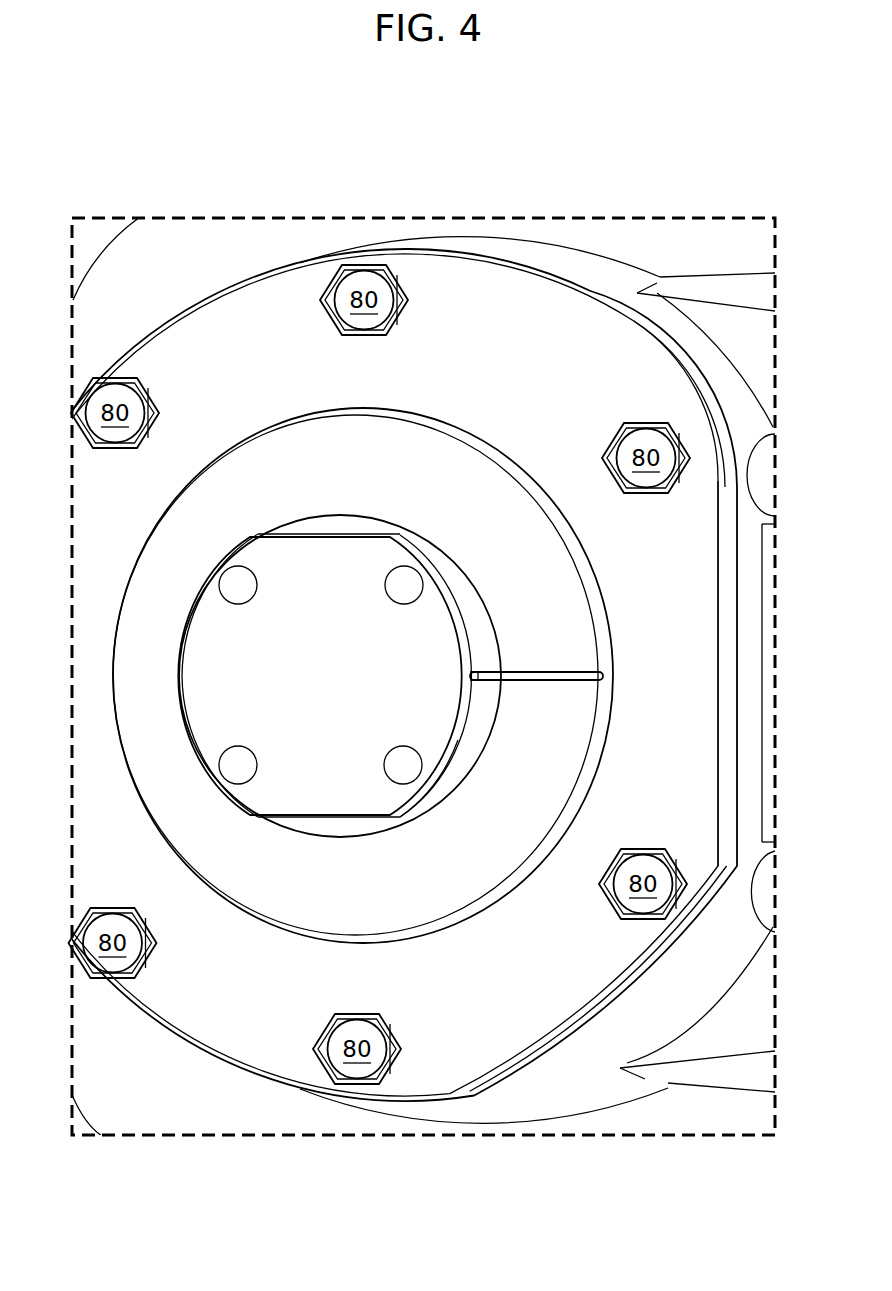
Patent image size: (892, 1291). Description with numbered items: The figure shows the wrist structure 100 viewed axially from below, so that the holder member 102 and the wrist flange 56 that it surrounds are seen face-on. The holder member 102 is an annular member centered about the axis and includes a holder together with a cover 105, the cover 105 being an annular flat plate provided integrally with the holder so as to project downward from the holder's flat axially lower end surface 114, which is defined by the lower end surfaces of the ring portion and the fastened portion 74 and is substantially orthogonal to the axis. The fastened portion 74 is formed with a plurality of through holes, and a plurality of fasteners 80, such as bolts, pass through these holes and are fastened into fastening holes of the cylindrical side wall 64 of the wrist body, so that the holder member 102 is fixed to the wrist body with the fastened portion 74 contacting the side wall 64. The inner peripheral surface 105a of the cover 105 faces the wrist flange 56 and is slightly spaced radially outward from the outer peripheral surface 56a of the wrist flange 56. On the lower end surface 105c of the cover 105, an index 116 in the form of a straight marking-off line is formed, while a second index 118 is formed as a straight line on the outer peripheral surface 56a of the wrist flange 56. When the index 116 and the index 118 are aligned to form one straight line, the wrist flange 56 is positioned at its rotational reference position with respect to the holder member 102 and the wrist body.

The wrist structure 100 is at (722, 106).
The holder member 102 is at (206, 283).
The side wall 64 is at (530, 258).
The fastened portion 74 is at (575, 358).
The fasteners 80 is at (380, 674).
The cover 105 is at (545, 759).
The inner peripheral surface 105a is at (480, 738).
The lower end surface 105c is at (505, 526).
The wrist flange 56 is at (302, 686).
The outer peripheral surface 56a is at (441, 797).
The index 116 is at (527, 668).
The index 118 is at (475, 681).
The lower end surface 114 is at (647, 654).